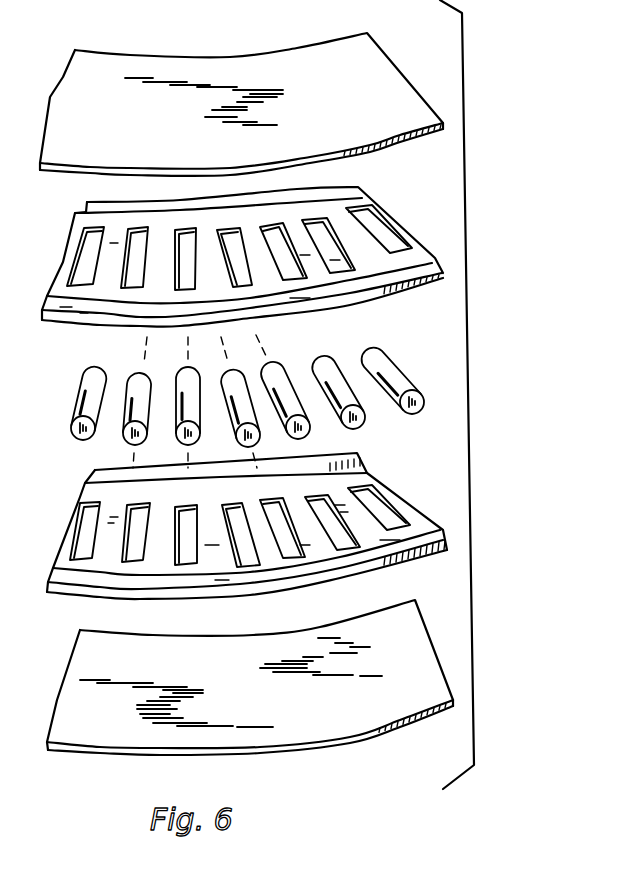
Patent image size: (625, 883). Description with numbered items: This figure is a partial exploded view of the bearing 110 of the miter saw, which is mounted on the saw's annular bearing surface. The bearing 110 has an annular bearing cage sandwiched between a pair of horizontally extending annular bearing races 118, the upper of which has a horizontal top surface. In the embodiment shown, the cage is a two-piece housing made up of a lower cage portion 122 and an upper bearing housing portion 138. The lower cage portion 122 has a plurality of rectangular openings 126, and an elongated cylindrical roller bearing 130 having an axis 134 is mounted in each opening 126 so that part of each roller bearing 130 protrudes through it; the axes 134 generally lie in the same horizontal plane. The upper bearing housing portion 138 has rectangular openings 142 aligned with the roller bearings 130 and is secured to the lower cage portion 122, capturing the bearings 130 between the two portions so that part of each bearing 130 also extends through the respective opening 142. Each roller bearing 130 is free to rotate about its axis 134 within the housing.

The bearing 110 is at (492, 242).
The annular bearing races 118 is at (225, 52).
The lower cage portion 122 is at (233, 545).
The rectangular openings 126 is at (138, 565).
The cylindrical roller bearing 130 is at (247, 393).
The axis 134 is at (303, 433).
The upper bearing housing portion 138 is at (242, 246).
The rectangular openings 142 is at (265, 227).